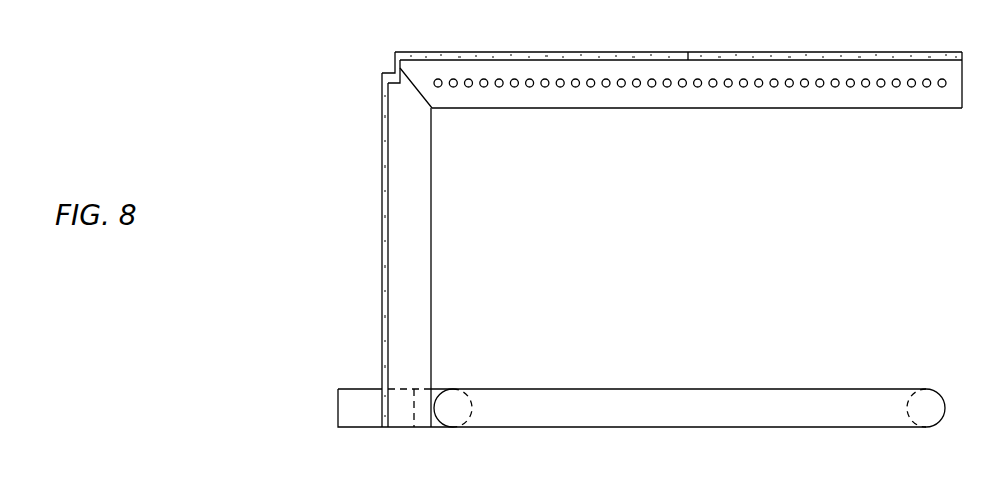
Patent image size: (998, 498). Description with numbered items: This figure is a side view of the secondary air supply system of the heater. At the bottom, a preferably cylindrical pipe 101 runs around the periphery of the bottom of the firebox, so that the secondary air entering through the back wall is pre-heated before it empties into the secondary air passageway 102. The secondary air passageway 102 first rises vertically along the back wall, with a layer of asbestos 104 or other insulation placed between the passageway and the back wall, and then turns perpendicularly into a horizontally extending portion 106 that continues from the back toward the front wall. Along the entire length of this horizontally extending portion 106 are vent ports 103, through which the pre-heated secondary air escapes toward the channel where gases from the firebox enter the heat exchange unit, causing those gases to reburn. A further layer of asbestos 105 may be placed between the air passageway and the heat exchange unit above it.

The pipe 101 is at (360, 389).
The secondary air passageway 102 is at (431, 263).
The vent ports 103 is at (575, 87).
The layer of asbestos 104 is at (381, 242).
The layer of asbestos 105 is at (565, 57).
The horizontally extending portion 106 is at (742, 108).